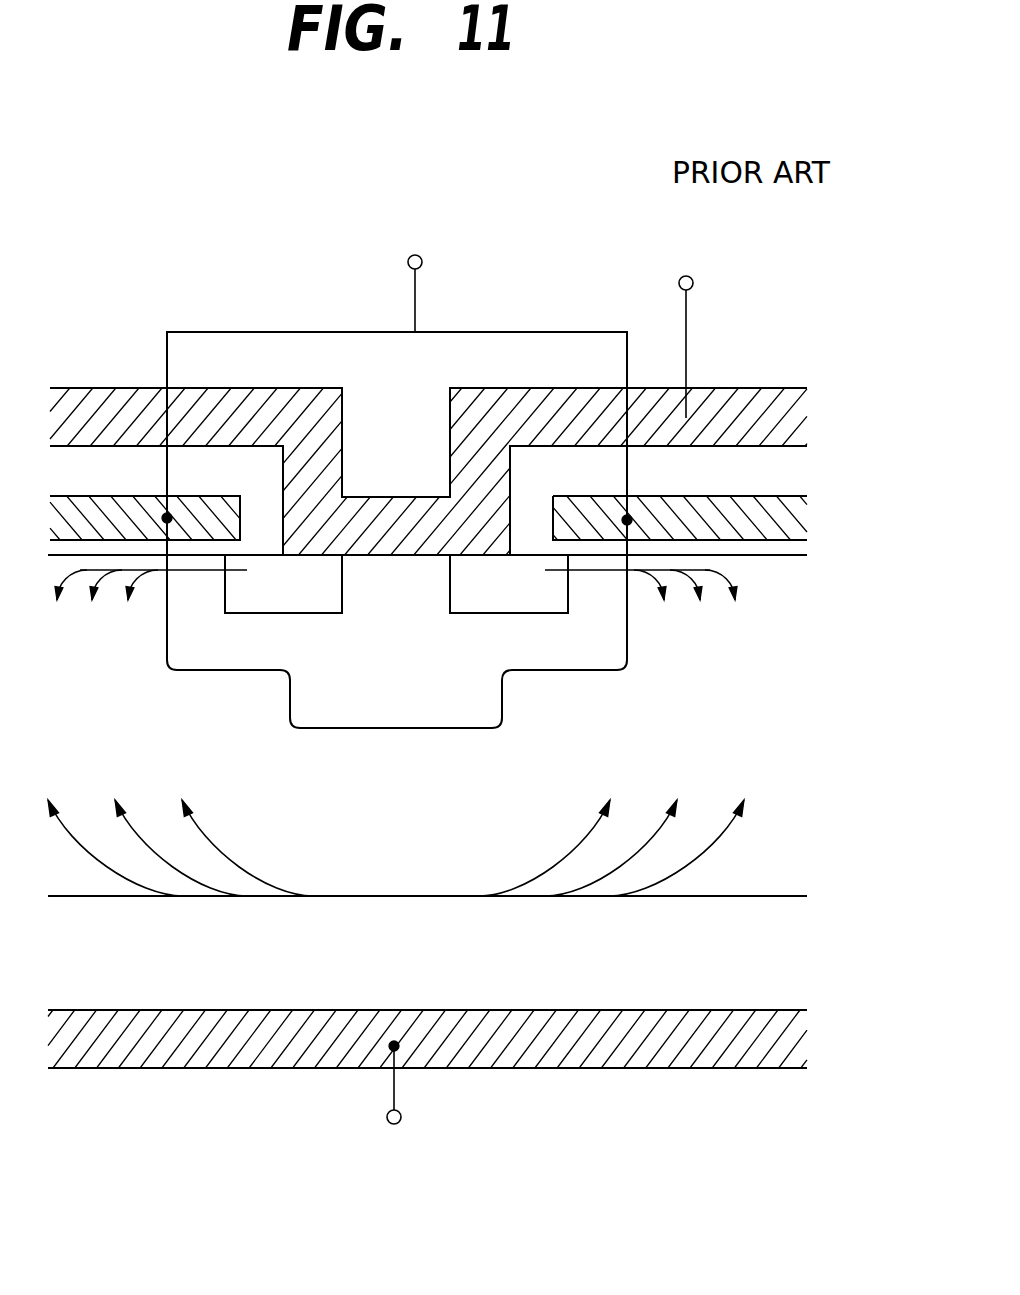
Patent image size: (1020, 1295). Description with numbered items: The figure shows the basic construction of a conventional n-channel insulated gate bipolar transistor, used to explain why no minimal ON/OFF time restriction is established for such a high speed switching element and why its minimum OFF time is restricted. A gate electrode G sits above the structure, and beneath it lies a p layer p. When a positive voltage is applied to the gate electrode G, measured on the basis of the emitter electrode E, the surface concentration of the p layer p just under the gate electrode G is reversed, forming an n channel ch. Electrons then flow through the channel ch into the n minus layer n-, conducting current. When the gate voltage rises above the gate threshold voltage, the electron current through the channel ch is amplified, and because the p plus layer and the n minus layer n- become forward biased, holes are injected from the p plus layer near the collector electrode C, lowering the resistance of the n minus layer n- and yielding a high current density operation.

The gate electrode G is at (409, 257).
The emitter electrode E is at (693, 280).
The collector electrode C is at (399, 1123).
The n channel ch is at (595, 571).
The p layer p is at (397, 530).
The n minus layer n- is at (427, 793).